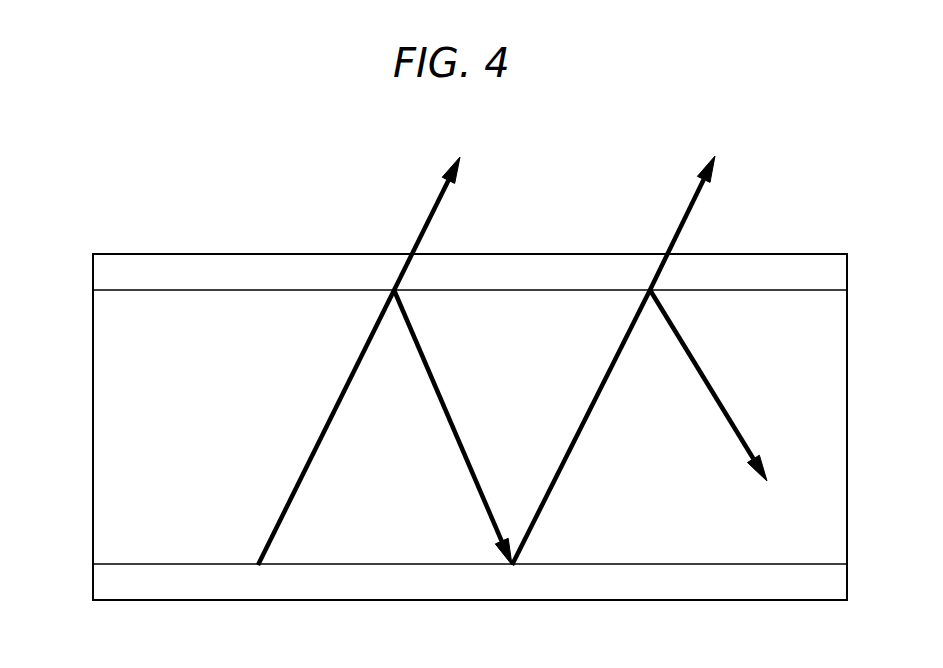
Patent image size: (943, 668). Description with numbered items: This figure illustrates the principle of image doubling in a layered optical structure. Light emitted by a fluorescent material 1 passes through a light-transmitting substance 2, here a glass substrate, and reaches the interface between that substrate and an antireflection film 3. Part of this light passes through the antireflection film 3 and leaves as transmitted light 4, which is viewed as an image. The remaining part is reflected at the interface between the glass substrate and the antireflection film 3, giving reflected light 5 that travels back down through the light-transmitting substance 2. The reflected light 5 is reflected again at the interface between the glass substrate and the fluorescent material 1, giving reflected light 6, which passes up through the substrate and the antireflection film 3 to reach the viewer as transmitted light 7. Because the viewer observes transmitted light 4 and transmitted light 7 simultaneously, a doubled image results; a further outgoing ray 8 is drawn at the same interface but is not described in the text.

The fluorescent material 1 is at (93, 581).
The light-transmitting substance 2 is at (93, 429).
The antireflection film 3 is at (93, 272).
The transmitted light 4 is at (429, 210).
The reflected light 5 is at (448, 430).
The reflected light 6 is at (576, 430).
The transmitted light 7 is at (684, 209).
The reflected light ray 8 is at (740, 448).